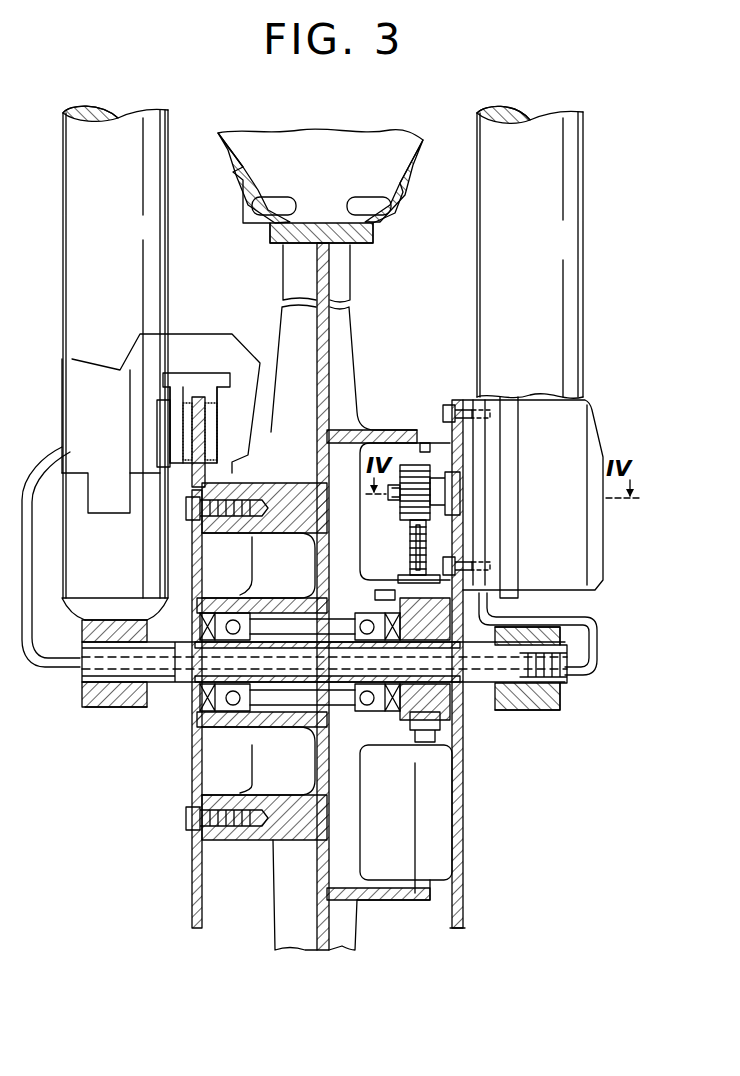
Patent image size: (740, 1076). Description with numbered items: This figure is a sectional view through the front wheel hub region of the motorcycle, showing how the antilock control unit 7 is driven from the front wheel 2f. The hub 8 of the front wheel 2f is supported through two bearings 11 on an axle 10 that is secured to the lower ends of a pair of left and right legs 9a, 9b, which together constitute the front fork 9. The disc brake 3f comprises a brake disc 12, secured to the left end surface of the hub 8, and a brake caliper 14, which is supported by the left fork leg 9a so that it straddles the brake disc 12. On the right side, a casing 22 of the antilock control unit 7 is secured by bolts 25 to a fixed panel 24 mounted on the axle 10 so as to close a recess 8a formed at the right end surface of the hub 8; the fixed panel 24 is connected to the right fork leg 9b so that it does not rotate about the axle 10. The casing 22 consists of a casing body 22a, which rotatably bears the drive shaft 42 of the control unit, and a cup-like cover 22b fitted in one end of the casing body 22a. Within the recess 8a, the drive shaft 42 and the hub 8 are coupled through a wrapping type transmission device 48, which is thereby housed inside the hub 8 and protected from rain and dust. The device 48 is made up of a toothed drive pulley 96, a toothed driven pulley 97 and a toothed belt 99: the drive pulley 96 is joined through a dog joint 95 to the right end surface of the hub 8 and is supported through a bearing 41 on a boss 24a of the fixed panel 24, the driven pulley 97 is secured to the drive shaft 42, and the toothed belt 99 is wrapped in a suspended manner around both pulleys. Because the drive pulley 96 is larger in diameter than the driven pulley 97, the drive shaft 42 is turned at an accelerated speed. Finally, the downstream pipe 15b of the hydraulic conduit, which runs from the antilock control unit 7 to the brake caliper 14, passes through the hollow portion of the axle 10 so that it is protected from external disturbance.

The front wheel 2f is at (356, 128).
The disc brake 3f is at (184, 330).
The antilock control unit 7 is at (578, 440).
The hub 8 is at (384, 432).
The recess 8a is at (388, 437).
The front fork 9 is at (556, 113).
The left fork leg 9a is at (62, 205).
The right fork leg 9b is at (572, 201).
The axle 10 is at (165, 684).
The bearings 11 is at (228, 718).
The brake disc 12 is at (198, 395).
The brake caliper 14 is at (142, 350).
The downstream pipe 15b is at (592, 676).
The casing 22 is at (548, 333).
The casing body 22a is at (487, 397).
The cup-like cover 22b is at (542, 397).
The fixed panel 24 is at (456, 402).
The boss 24a is at (324, 662).
The bolts 25 is at (443, 414).
The bearing 41 is at (440, 728).
The drive shaft 42 is at (398, 498).
The wrapping type transmission device 48 is at (425, 478).
The dog joint 95 is at (375, 594).
The toothed drive pulley 96 is at (398, 580).
The toothed driven pulley 97 is at (430, 495).
The toothed belt 99 is at (428, 544).